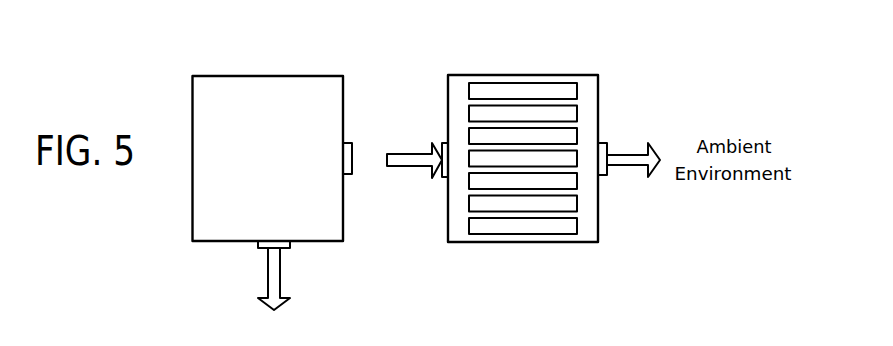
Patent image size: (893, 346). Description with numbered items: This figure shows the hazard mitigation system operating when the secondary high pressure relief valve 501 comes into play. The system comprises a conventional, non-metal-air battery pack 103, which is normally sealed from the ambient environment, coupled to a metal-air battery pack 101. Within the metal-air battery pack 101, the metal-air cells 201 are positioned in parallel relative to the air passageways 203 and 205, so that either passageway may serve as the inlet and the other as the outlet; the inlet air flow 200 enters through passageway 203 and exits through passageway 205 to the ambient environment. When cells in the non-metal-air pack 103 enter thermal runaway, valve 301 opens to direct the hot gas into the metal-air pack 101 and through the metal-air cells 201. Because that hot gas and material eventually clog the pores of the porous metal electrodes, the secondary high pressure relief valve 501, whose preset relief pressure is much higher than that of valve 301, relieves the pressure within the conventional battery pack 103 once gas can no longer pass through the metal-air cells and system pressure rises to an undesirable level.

The conventional battery pack 103 is at (238, 242).
The valve 301 is at (352, 143).
The secondary high pressure relief valve 501 is at (290, 248).
The metal-air battery pack 101 is at (470, 243).
The metal-air cells 201 is at (547, 157).
The air passageway 203 is at (442, 143).
The air passageway 205 is at (607, 143).
The air inlet flow arrow 200 is at (411, 168).